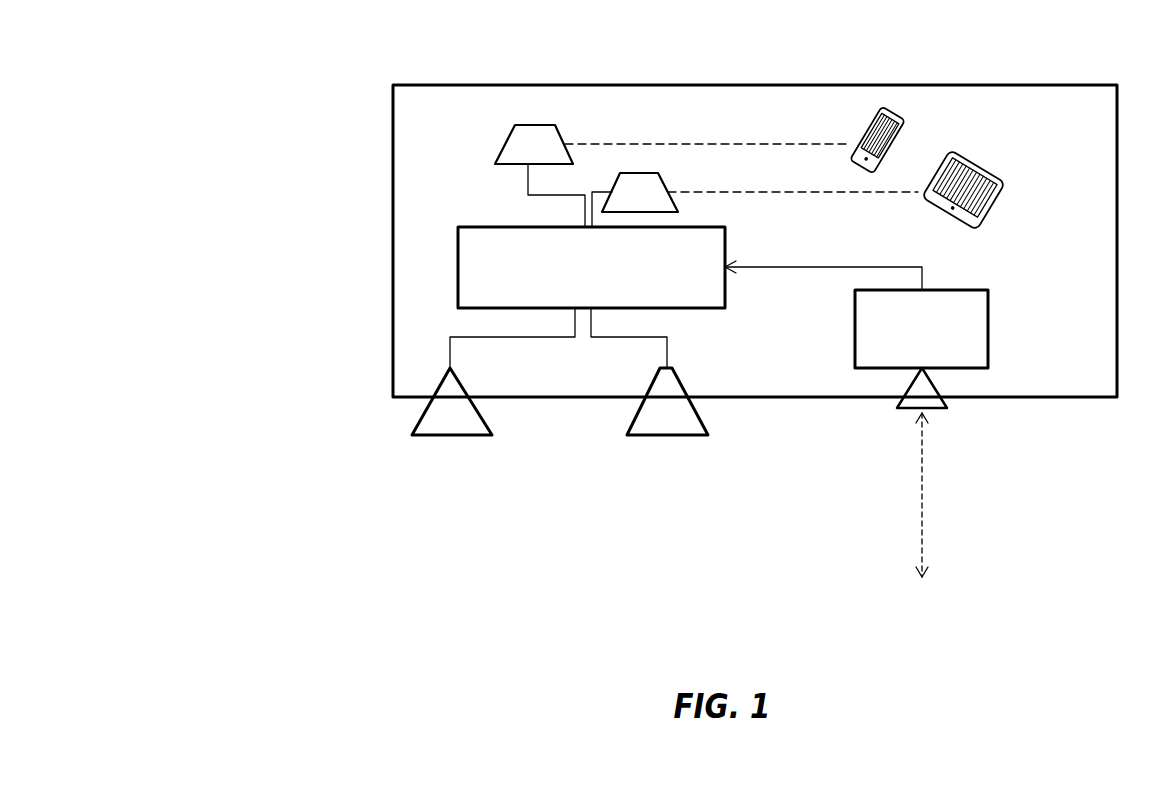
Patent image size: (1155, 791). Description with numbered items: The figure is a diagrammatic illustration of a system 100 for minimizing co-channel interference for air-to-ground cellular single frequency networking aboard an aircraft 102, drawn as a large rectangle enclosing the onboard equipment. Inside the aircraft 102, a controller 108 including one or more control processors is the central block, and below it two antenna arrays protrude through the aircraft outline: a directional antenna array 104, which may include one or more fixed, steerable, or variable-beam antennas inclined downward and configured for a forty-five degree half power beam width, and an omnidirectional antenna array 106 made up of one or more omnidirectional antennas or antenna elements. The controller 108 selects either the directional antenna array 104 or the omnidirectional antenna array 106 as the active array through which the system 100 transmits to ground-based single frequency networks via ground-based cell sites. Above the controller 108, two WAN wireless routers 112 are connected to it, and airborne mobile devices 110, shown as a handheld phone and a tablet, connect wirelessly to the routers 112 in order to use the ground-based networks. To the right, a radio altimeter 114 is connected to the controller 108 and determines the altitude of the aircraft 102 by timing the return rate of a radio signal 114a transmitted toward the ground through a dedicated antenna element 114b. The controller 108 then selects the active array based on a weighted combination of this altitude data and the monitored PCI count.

The system 100 is at (252, 95).
The aircraft 102 is at (392, 175).
The directional antenna array 104 is at (452, 437).
The omnidirectional antenna array 106 is at (667, 437).
The controller 108 is at (591, 267).
The airborne mobile devices 110 is at (897, 150).
The WAN wireless routers 112 is at (537, 125).
The radio altimeter 114 is at (921, 329).
The radio signal 114a is at (927, 543).
The dedicated antenna element 114b is at (937, 411).